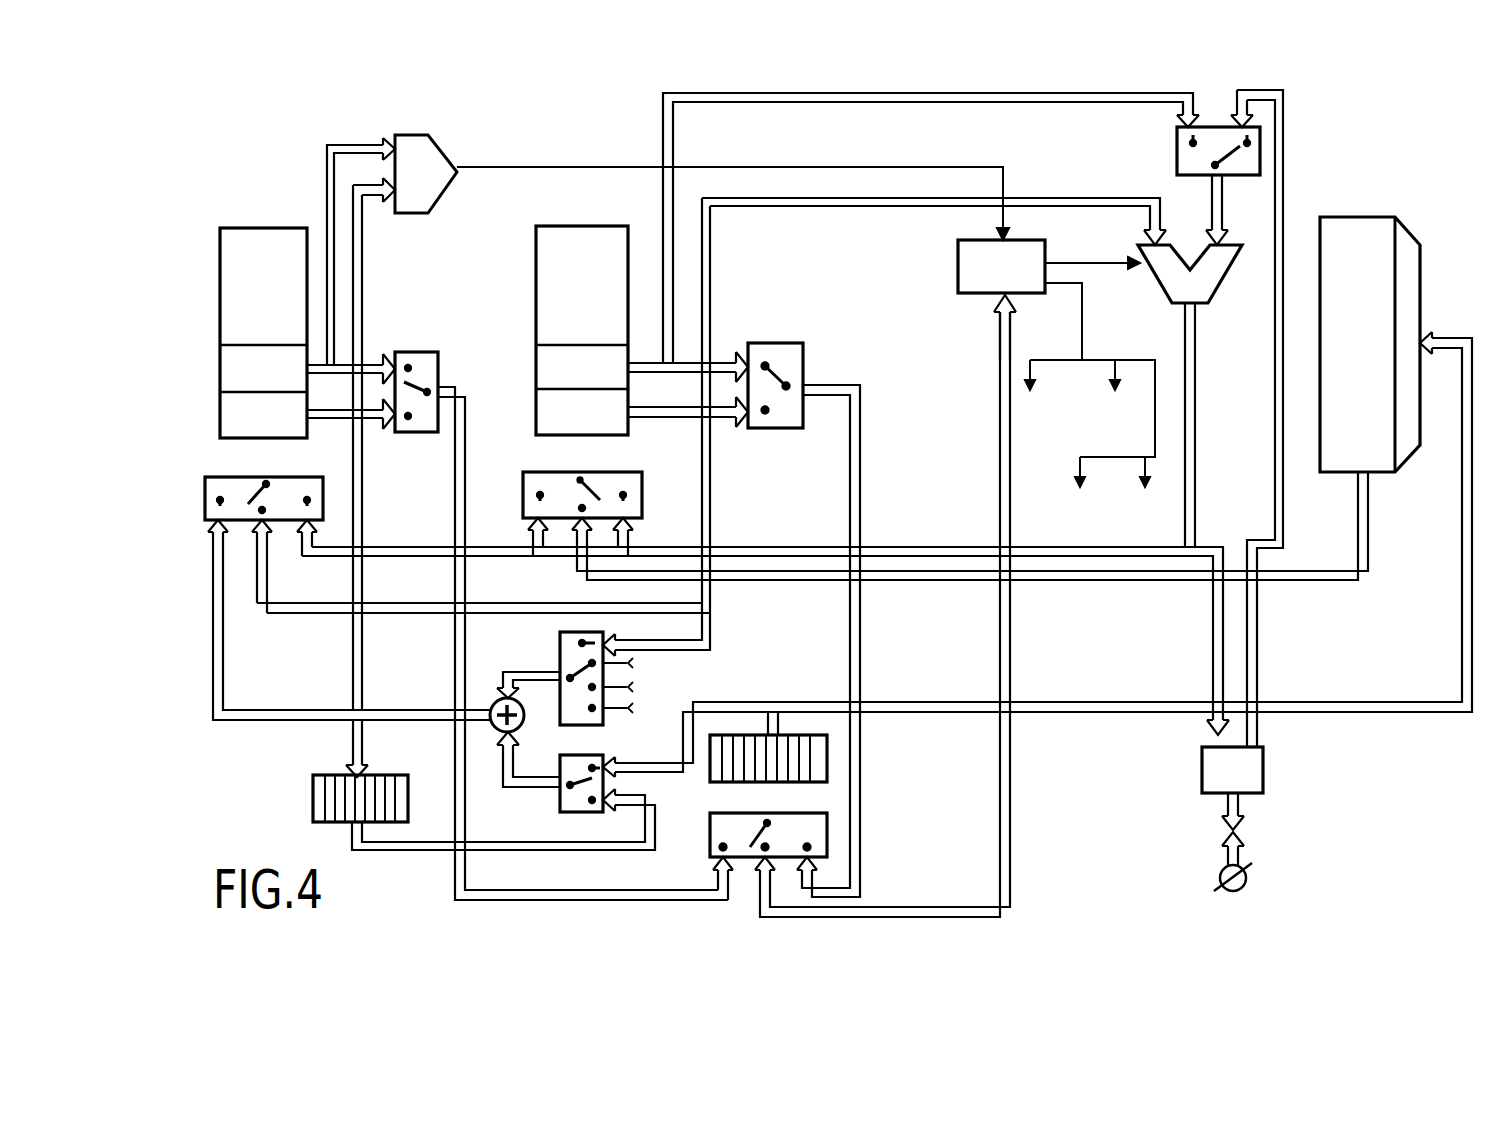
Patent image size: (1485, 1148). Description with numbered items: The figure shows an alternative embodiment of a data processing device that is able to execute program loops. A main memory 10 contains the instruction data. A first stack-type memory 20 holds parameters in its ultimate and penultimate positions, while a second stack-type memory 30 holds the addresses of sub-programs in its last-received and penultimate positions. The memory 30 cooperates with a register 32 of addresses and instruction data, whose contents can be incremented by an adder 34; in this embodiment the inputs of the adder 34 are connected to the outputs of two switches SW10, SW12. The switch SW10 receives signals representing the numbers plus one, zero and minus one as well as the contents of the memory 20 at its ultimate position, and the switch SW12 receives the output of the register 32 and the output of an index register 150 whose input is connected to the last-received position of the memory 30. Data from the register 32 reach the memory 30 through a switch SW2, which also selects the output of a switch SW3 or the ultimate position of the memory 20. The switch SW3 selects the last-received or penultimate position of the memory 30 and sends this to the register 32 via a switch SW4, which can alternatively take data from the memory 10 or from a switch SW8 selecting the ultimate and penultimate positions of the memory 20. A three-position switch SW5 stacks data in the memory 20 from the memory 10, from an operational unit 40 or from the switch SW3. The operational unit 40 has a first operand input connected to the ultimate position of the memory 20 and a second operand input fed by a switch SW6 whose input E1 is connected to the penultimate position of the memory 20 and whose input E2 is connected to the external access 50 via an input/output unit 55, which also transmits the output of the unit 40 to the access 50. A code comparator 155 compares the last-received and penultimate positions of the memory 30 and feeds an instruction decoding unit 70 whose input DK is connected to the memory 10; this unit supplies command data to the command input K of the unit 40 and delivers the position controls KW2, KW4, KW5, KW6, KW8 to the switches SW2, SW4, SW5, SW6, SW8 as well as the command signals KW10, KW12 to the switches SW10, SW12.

The main memory 10 is at (1358, 217).
The first stack-type memory 20 is at (578, 226).
The second stack-type memory 30 is at (262, 228).
The register of addresses and instruction data 32 is at (828, 759).
The adder 34 is at (500, 698).
The operational unit 40 is at (1092, 402).
The external access 50 is at (1248, 873).
The input/output unit 55 is at (1263, 760).
The instruction decoding unit 70 is at (958, 262).
The index register 150 is at (328, 775).
The code comparator 155 is at (440, 213).
The command input K is at (1140, 248).
The input of instruction decoding unit DK is at (998, 306).
The first input of switch SW6 E1 is at (1157, 121).
The second input of switch SW6 E2 is at (1214, 96).
The switch SW2 is at (205, 512).
The switch SW3 is at (425, 352).
The switch SW4 is at (828, 838).
The three-position switch SW5 is at (642, 492).
The switch SW6 is at (1262, 151).
The switch SW8 is at (770, 343).
The switch SW10 is at (560, 648).
The switch SW12 is at (560, 793).
The position control KW2 is at (200, 500).
The position control KW4 is at (700, 834).
The position control KW5 is at (515, 490).
The position control KW6 is at (1168, 152).
The position control KW8 is at (775, 436).
The command signal KW10 is at (579, 735).
The command signal KW12 is at (583, 820).